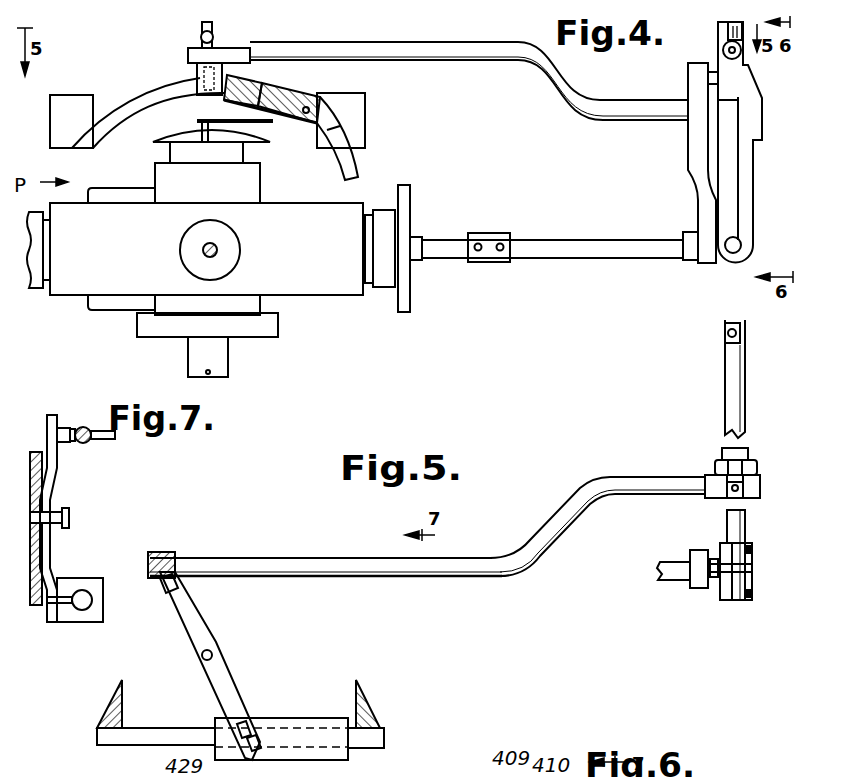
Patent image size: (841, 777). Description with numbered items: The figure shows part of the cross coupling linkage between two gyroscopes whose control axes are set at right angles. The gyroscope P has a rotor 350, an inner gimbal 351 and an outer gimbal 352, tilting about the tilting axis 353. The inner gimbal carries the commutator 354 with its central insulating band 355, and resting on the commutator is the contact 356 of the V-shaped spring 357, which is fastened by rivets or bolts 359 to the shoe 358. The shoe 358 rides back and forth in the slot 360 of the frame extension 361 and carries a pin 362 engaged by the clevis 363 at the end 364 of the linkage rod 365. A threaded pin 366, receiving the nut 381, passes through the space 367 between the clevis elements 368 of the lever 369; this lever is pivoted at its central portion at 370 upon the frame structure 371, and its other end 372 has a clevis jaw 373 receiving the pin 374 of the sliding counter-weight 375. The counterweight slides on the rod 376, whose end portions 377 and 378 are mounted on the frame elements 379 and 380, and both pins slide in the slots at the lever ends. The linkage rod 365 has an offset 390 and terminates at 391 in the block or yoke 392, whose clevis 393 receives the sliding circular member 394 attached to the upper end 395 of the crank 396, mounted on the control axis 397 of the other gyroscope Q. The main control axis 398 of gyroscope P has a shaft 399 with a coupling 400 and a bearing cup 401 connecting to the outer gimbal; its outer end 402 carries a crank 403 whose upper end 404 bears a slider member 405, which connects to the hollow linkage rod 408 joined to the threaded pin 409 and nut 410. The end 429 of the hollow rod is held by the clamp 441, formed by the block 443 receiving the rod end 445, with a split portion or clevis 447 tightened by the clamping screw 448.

In FIG. 4, the rotor 350 is at (108, 195).
In FIG. 4, the inner gimbal 351 is at (180, 188).
In FIG. 4, the outer gimbal 352 is at (338, 280).
In FIG. 4, the tilting axis 353 is at (205, 250).
In FIG. 4, the commutator 354 is at (253, 143).
In FIG. 4, the central insulating band 355 is at (172, 155).
In FIG. 4, the contact 356 is at (165, 137).
In FIG. 4, the V-shaped spring 357 is at (270, 122).
In FIG. 4, the shoe 358 is at (300, 92).
In FIG. 4, the rivets or bolts 359 is at (265, 82).
In FIG. 4, the slot 360 is at (170, 92).
In FIG. 4, the frame extension 361 is at (110, 116).
In FIG. 4, the pin 362 is at (203, 117).
In FIG. 4, the clevis 363 is at (243, 66).
In FIG. 4, the end 364 is at (207, 53).
In FIG. 4, the linkage rod 365 is at (492, 48).
In FIG. 7, the linkage rod 365 is at (83, 445).
In FIG. 5, the linkage rod 365 is at (328, 557).
In FIG. 4, the pin 366 is at (200, 24).
In FIG. 7, the pin 366 is at (50, 428).
In FIG. 5, the pin 366 is at (175, 562).
In FIG. 5, the space 367 is at (148, 560).
In FIG. 5, the clevis elements 368 is at (162, 588).
In FIG. 5, the lever 369 is at (200, 612).
In FIG. 7, the pivot 370 is at (70, 518).
In FIG. 5, the pivot 370 is at (202, 655).
In FIG. 7, the frame structure 371 is at (53, 493).
In FIG. 5, the other end 372 is at (232, 690).
In FIG. 5, the clevis jaw 373 is at (256, 722).
In FIG. 7, the pin 374 is at (55, 612).
In FIG. 5, the pin 374 is at (262, 740).
In FIG. 7, the sliding counter-weight 375 is at (82, 624).
In FIG. 5, the sliding counter-weight 375 is at (328, 718).
In FIG. 5, the rod 376 is at (150, 728).
In FIG. 5, the end portion 377 is at (98, 744).
In FIG. 5, the end portion 378 is at (385, 738).
In FIG. 5, the frame element 379 is at (98, 713).
In FIG. 5, the frame element 380 is at (370, 715).
In FIG. 4, the nut 381 is at (200, 44).
In FIG. 5, the nut 381 is at (160, 552).
In FIG. 4, the offset 390 is at (556, 92).
In FIG. 5, the offset 390 is at (552, 530).
In FIG. 4, the terminal end 391 is at (682, 120).
In FIG. 5, the terminal end 391 is at (702, 477).
In FIG. 4, the block or yoke 392 is at (755, 128).
In FIG. 5, the block or yoke 392 is at (727, 500).
In FIG. 5, the clevis 393 is at (712, 490).
In FIG. 5, the sliding circular member 394 is at (725, 495).
In FIG. 5, the upper end 395 is at (722, 450).
In FIG. 4, the crank 396 is at (752, 200).
In FIG. 4, the control axis 397 is at (733, 254).
In FIG. 4, the main control axis 398 is at (445, 260).
In FIG. 4, the shaft 399 is at (555, 240).
In FIG. 5, the shaft 399 is at (665, 574).
In FIG. 4, the coupling 400 is at (488, 262).
In FIG. 4, the bearing cup 401 is at (408, 220).
In FIG. 4, the outer end 402 is at (678, 258).
In FIG. 4, the crank 403 is at (700, 148).
In FIG. 5, the crank 403 is at (698, 590).
In FIG. 4, the upper end 404 is at (700, 72).
In FIG. 4, the slider member 405 is at (718, 80).
In FIG. 4, the hollow linkage rod 408 is at (748, 40).
In FIG. 5, the hollow linkage rod 408 is at (742, 360).
In FIG. 5, the threaded pin 409 is at (742, 333).
In FIG. 5, the nut 410 is at (726, 340).
In FIG. 5, the end 429 is at (747, 522).
In FIG. 4, the clamp 441 is at (720, 27).
In FIG. 5, the clamp 441 is at (752, 570).
In FIG. 4, the block 443 is at (737, 127).
In FIG. 4, the end 445 is at (702, 62).
In FIG. 4, the split portion or clevis 447 is at (723, 48).
In FIG. 5, the clamping screw 448 is at (752, 548).